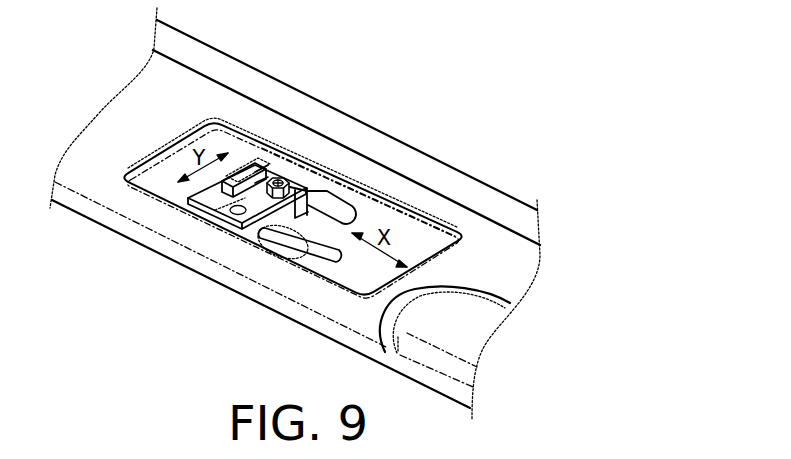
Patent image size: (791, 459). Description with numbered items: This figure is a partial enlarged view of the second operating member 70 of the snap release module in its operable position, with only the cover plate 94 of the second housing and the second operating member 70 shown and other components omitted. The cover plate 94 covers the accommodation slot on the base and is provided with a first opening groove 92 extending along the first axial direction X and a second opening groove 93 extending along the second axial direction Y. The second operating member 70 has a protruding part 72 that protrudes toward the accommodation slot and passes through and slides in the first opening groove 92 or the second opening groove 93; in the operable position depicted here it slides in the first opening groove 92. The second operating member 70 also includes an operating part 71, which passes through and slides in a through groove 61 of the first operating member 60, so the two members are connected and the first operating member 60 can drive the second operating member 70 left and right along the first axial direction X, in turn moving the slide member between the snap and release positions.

The first operating member 60 is at (150, 188).
The through groove 61 is at (318, 195).
The second operating member 70 is at (218, 206).
The operating part 71 is at (283, 170).
The protruding part 72 is at (293, 254).
The first opening groove 92 is at (343, 222).
The second opening groove 93 is at (254, 162).
The cover plate 94 is at (221, 97).